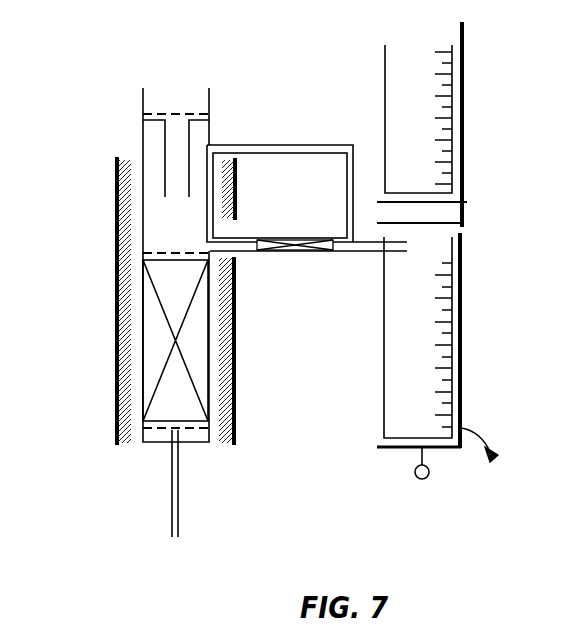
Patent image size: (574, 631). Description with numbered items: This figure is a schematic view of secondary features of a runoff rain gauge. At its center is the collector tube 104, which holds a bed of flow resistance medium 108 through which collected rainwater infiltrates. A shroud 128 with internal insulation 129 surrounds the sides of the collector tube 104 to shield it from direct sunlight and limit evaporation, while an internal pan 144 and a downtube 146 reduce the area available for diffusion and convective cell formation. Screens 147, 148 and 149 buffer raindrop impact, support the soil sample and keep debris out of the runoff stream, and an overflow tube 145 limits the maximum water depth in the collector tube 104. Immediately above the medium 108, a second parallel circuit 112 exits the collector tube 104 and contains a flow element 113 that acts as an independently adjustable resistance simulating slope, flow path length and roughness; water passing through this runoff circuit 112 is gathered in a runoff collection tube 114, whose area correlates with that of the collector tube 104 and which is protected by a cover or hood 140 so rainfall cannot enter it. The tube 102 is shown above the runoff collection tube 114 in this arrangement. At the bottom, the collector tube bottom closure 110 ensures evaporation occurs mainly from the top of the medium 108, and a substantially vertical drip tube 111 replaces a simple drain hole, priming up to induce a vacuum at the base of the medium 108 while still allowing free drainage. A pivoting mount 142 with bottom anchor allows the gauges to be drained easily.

The upper graduated cylinder 102 is at (385, 62).
The collector tube 104 is at (143, 142).
The flow resistance medium 108 is at (145, 298).
The collector tube bottom closure 110 is at (202, 442).
The drip tube 111 is at (175, 539).
The second (parallel) circuit 112 is at (357, 253).
The flow element 113 is at (303, 240).
The runoff collection tube 114 is at (382, 380).
The shroud 128 is at (117, 172).
The internal insulation 129 is at (117, 355).
The cover or hood 140 is at (453, 223).
The pivoting mount 142 is at (418, 483).
The internal pan 144 is at (203, 127).
The overflow tube 145 is at (300, 145).
The downtube 146 is at (188, 190).
The screen 147 is at (172, 250).
The screen 148 is at (172, 112).
The screen 149 is at (157, 430).